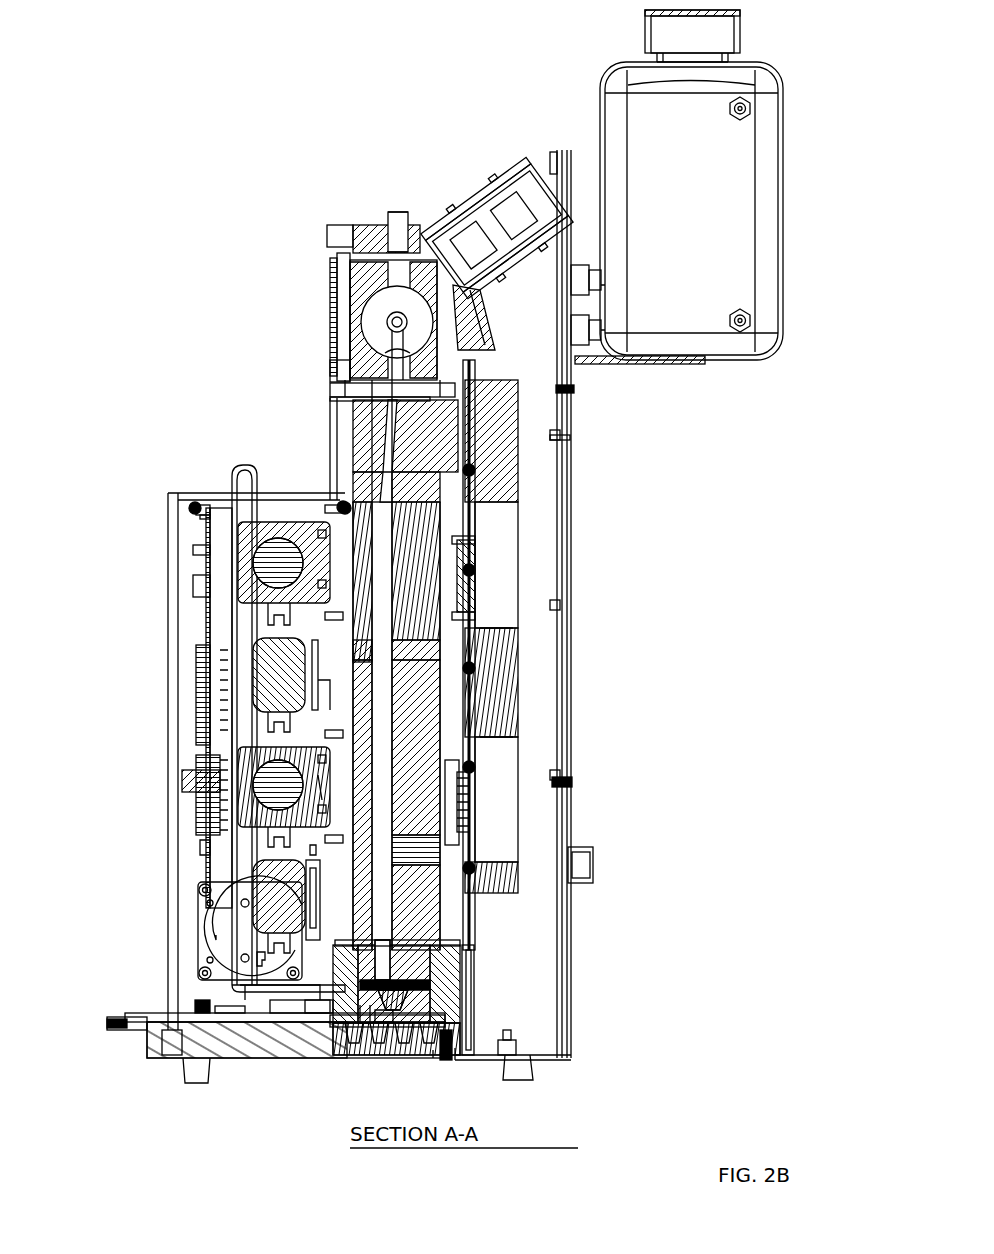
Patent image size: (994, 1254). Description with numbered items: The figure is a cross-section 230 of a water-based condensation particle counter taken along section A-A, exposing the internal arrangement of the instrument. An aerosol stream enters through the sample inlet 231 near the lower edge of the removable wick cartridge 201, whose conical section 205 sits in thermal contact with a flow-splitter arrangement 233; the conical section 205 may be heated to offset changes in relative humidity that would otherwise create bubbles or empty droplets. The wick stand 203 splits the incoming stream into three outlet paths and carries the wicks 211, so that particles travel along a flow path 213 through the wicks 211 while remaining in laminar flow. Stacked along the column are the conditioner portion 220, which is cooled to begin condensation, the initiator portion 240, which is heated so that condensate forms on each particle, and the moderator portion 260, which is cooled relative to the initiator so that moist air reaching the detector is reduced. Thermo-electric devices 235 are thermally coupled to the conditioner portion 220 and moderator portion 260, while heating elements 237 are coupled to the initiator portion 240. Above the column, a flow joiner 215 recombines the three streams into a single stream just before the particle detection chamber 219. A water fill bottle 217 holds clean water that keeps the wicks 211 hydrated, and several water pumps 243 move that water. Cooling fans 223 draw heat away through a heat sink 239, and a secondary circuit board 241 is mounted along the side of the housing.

The removable wick cartridge 201 is at (508, 1045).
The wick stand 203 is at (430, 955).
The conical section 205 is at (420, 1000).
The wicks 211 is at (472, 592).
The flow path 213 is at (380, 578).
The flow joiner 215 is at (455, 440).
The water fill bottle 217 is at (735, 62).
The particle detection chamber 219 is at (350, 302).
The conditioner portion 220 is at (148, 940).
The cooling fans 223 is at (497, 196).
The cross-section 230 is at (178, 82).
The sample inlet 231 is at (140, 1015).
The flow-splitter arrangement 233 is at (377, 995).
The thermo-electric devices 235 is at (470, 600).
The heating elements 237 is at (472, 672).
The heat sink 239 is at (520, 718).
The initiator portion 240 is at (148, 645).
The secondary circuit board 241 is at (222, 510).
The water pumps 243 is at (258, 462).
The moderator portion 260 is at (148, 515).